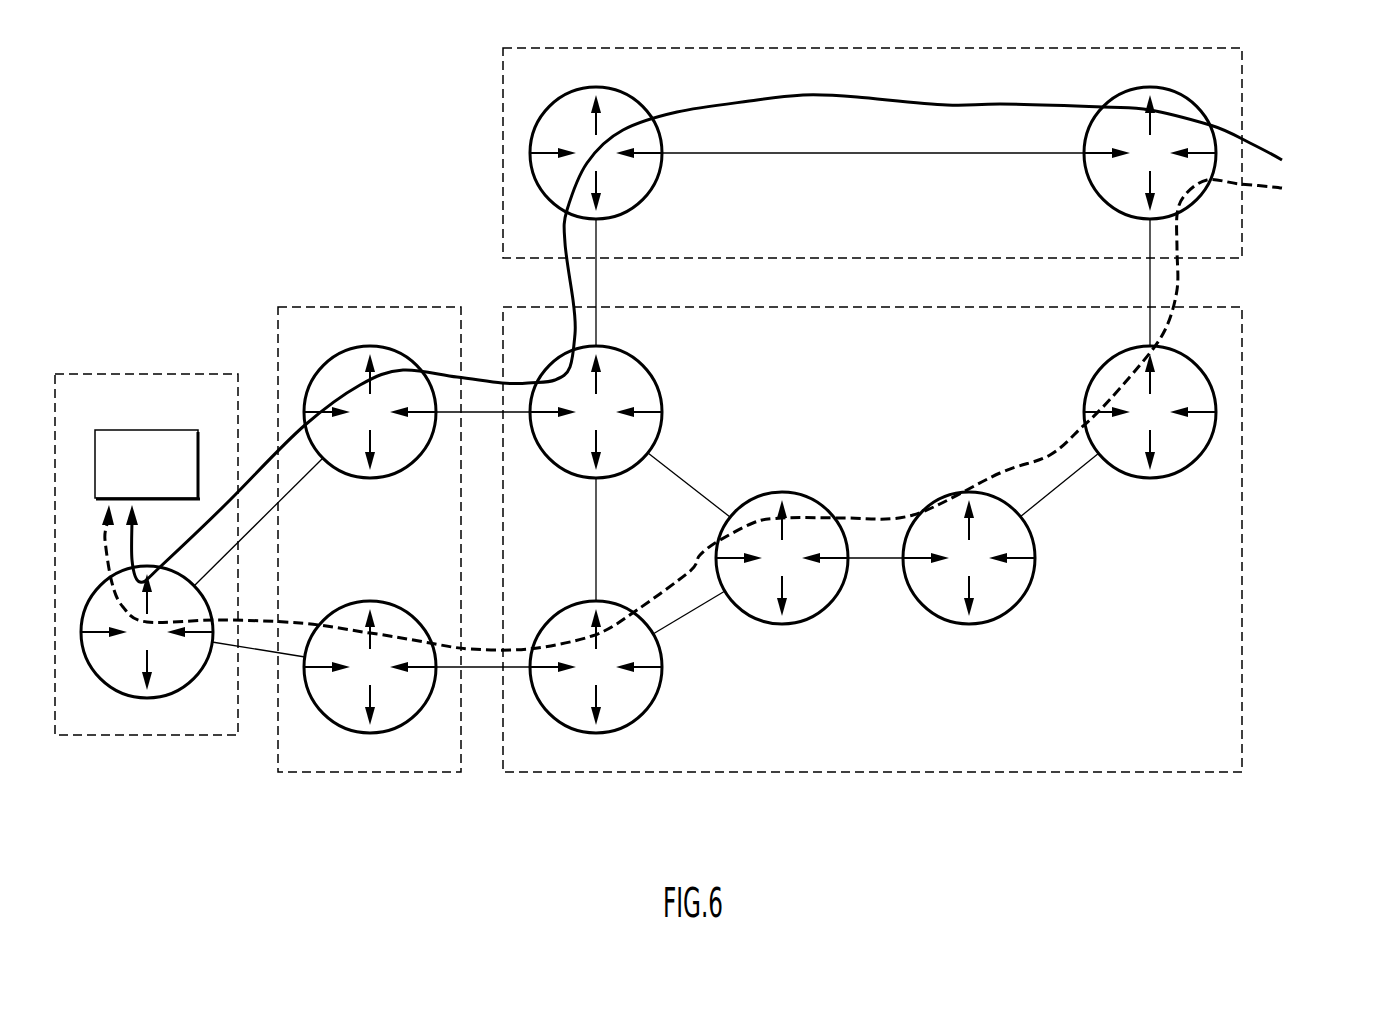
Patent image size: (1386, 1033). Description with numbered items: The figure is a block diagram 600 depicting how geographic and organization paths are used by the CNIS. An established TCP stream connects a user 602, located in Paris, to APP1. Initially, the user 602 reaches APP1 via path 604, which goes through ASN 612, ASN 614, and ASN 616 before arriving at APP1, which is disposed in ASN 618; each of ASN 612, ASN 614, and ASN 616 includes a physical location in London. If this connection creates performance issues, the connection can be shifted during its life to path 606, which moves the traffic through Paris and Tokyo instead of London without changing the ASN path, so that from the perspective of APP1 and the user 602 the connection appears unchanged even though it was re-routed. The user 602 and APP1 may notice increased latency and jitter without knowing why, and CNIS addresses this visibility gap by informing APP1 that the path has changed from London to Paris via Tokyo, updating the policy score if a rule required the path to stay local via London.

The block diagram 600 is at (240, 159).
The user 602 is at (1327, 175).
The path 604 is at (947, 103).
The path 606 is at (878, 512).
The ASN 612 is at (1170, 48).
The ASN 614 is at (1138, 772).
The ASN 616 is at (390, 772).
The ASN 618 is at (170, 735).